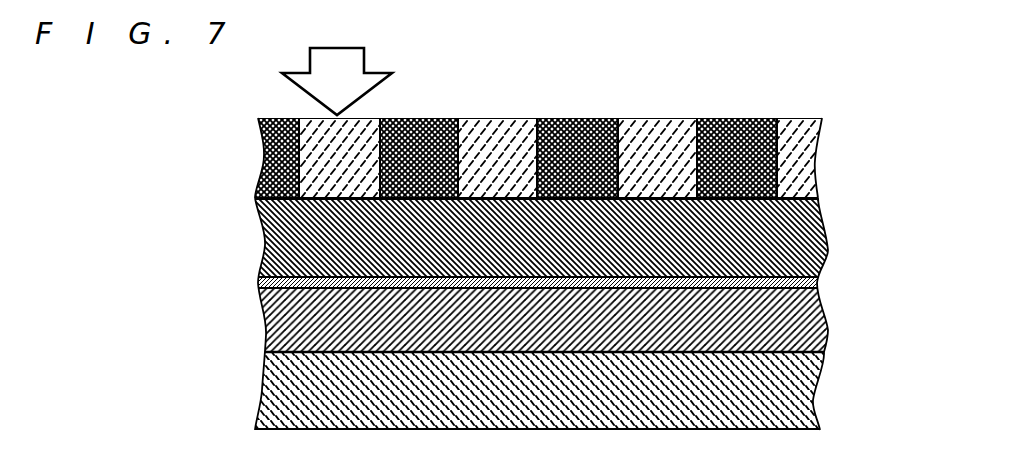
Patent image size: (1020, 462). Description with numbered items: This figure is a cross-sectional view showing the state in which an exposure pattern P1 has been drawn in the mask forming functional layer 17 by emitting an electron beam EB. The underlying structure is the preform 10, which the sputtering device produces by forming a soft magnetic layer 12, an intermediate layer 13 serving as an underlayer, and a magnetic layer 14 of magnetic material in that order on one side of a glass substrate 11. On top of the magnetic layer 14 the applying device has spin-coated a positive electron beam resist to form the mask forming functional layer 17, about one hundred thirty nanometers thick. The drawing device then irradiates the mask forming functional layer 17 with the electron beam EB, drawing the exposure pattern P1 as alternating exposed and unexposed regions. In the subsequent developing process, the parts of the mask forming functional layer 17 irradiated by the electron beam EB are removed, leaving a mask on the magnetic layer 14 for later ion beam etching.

The magnetic recording medium manufacturing preform 10 is at (478, 314).
The glass substrate 11 is at (505, 391).
The soft magnetic layer 12 is at (262, 318).
The intermediate layer 13 is at (260, 282).
The magnetic layer 14 is at (262, 240).
The mask forming functional layer 17 is at (262, 165).
The electron beam EB is at (309, 64).
The exposure pattern P1 is at (599, 77).